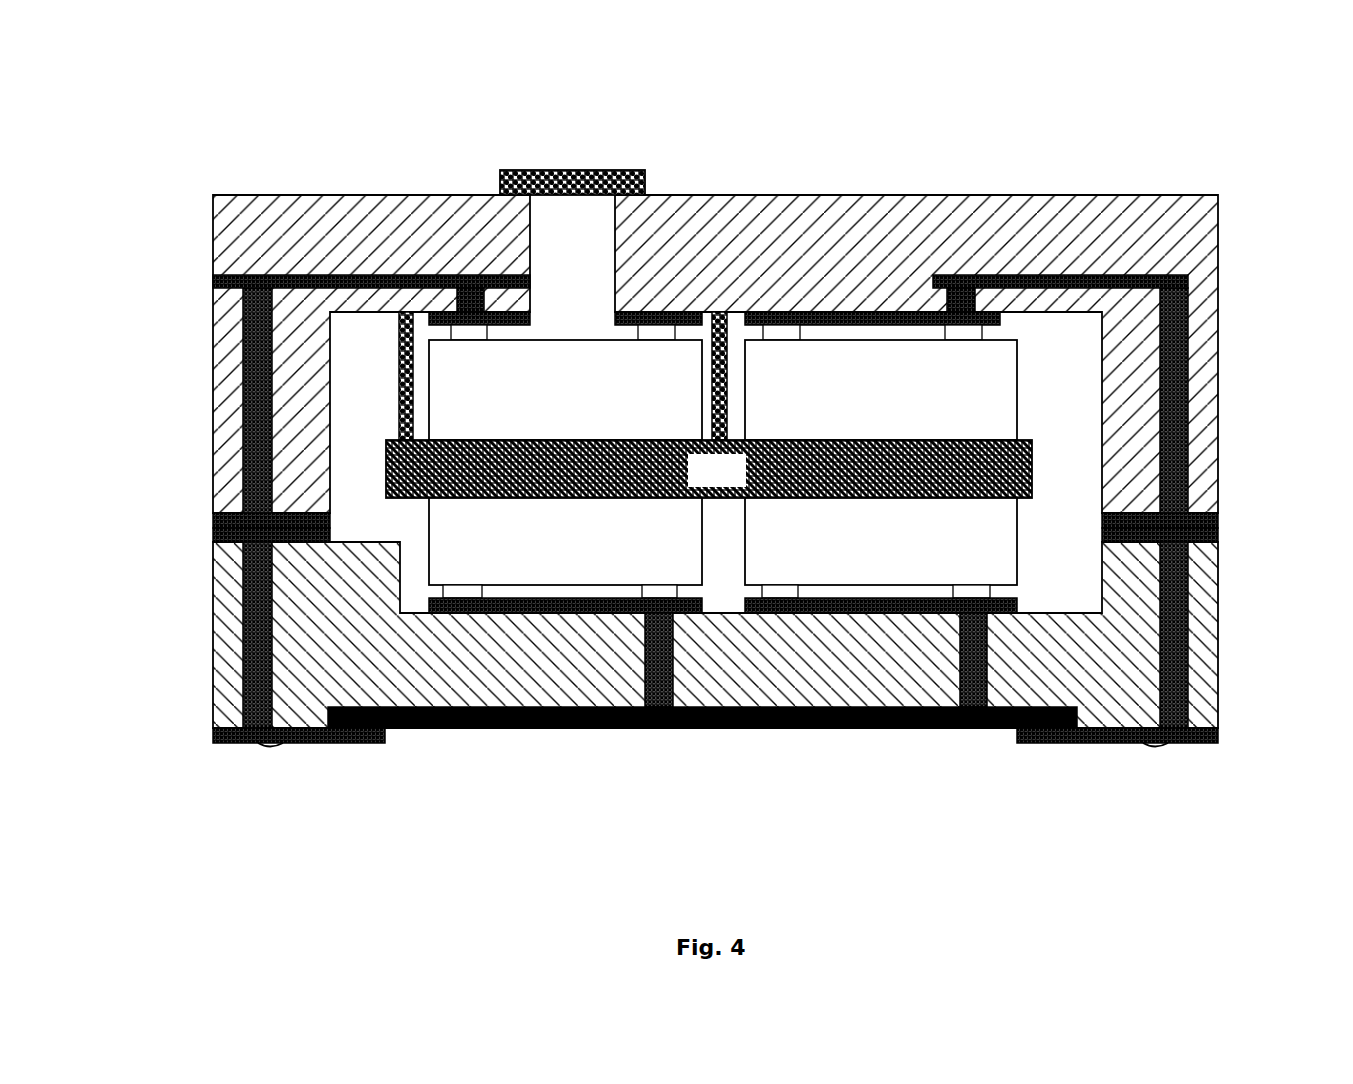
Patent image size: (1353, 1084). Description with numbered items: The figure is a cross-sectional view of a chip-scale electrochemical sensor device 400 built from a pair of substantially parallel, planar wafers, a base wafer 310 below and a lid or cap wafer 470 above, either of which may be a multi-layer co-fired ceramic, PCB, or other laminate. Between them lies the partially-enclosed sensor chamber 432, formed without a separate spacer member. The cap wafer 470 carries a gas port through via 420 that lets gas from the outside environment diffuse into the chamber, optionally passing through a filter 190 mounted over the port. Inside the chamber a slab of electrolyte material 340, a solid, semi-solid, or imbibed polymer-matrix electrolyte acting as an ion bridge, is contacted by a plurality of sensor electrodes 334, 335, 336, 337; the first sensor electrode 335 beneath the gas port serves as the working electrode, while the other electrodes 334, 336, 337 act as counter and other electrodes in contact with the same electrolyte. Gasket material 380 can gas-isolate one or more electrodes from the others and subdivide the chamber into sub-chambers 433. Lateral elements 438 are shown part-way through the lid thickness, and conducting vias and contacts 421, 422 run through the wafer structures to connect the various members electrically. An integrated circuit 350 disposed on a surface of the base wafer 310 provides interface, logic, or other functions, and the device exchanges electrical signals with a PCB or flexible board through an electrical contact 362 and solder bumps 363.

The electrochemical sensor device 400 is at (212, 80).
The cap wafer 470 is at (211, 244).
The lateral elements 438 is at (352, 270).
The gas port through via 420 is at (573, 220).
The filter 190 is at (629, 165).
The sensor chamber 432 is at (1043, 378).
The gasket material 380 is at (396, 418).
The first sensor electrode 335 is at (588, 406).
The sensor electrode 337 is at (890, 406).
The electrolyte material 340 is at (735, 481).
The sensor electrode 334 is at (590, 554).
The sensor electrode 336 is at (891, 554).
The base wafer 310 is at (207, 611).
The sub-chambers 433 is at (425, 586).
The conducting via and contact 422 is at (1221, 520).
The conducting via and contact 421 is at (1190, 623).
The solder bumps 363 is at (265, 750).
The electrical contact 362 is at (370, 750).
The integrated circuit 350 is at (792, 735).